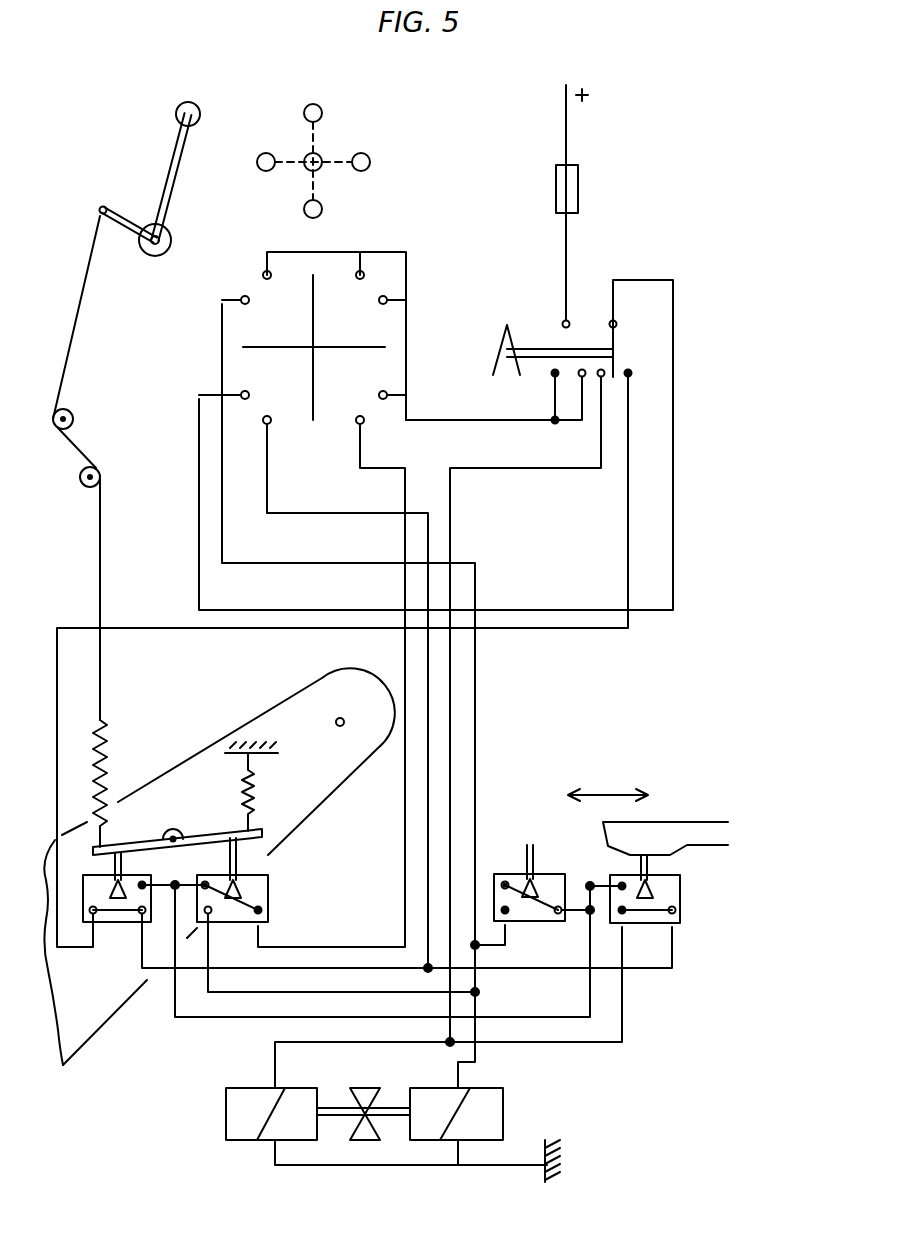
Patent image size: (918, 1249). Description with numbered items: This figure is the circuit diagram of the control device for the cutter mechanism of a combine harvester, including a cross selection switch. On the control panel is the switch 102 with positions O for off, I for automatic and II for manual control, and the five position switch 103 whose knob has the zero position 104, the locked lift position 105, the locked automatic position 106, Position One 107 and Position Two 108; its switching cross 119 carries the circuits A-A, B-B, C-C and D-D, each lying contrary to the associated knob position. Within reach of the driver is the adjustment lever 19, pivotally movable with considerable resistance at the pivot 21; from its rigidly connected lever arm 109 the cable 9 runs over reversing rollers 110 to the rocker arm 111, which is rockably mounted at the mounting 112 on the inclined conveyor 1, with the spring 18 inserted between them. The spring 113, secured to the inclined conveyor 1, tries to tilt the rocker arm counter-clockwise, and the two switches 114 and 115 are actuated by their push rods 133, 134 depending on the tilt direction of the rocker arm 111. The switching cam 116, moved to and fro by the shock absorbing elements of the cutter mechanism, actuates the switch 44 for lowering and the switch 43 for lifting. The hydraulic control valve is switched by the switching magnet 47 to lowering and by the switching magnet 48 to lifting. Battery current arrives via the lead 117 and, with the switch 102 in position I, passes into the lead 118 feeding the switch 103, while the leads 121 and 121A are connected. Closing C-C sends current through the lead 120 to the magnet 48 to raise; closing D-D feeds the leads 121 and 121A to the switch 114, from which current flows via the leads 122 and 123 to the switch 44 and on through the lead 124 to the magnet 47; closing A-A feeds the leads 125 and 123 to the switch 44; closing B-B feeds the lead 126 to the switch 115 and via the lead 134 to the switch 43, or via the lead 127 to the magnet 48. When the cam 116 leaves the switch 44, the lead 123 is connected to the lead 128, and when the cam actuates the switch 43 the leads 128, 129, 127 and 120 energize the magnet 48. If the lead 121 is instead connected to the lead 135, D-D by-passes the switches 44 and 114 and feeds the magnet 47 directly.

The inclined conveyor 1 is at (275, 718).
The cable 9 is at (77, 292).
The spring 18 is at (105, 757).
The adjustment lever 19 is at (182, 170).
The pivot 21 is at (172, 245).
The switch for lifting 43 is at (512, 874).
The switch for lowering 44 is at (680, 885).
The switching magnet for lowering 47 is at (226, 1108).
The switching magnet for lifting 48 is at (503, 1095).
The switch 102 is at (518, 352).
The five position switch 103 is at (322, 137).
The zero position 104 is at (316, 160).
The locked lift position 105 is at (320, 210).
The locked automatic position 106 is at (368, 164).
The Position One 107 is at (308, 108).
The Position Two 108 is at (258, 160).
The lever arm 109 is at (100, 210).
The reversing rollers 110 is at (97, 470).
The rocker arm 111 is at (137, 840).
The rocker arm mounting 112 is at (178, 834).
The spring 113 is at (253, 795).
The switch 114 is at (118, 928).
The switch 115 is at (268, 890).
The switching cam 116 is at (665, 830).
The lead 117 is at (568, 240).
The lead 118 is at (494, 400).
The switching cross 119 is at (316, 346).
The lead 120 is at (278, 552).
The lead 121 is at (630, 280).
The lead 121A is at (628, 543).
The lead 122 is at (292, 968).
The lead 123 is at (383, 961).
The lead 124 is at (622, 1014).
The lead 125 is at (300, 513).
The lead 126 is at (405, 822).
The lead 127 is at (366, 992).
The lead 128 is at (590, 880).
The lead 129 is at (500, 945).
The lead 133 is at (151, 866).
The lead 134 is at (220, 859).
The lead 135 is at (502, 469).